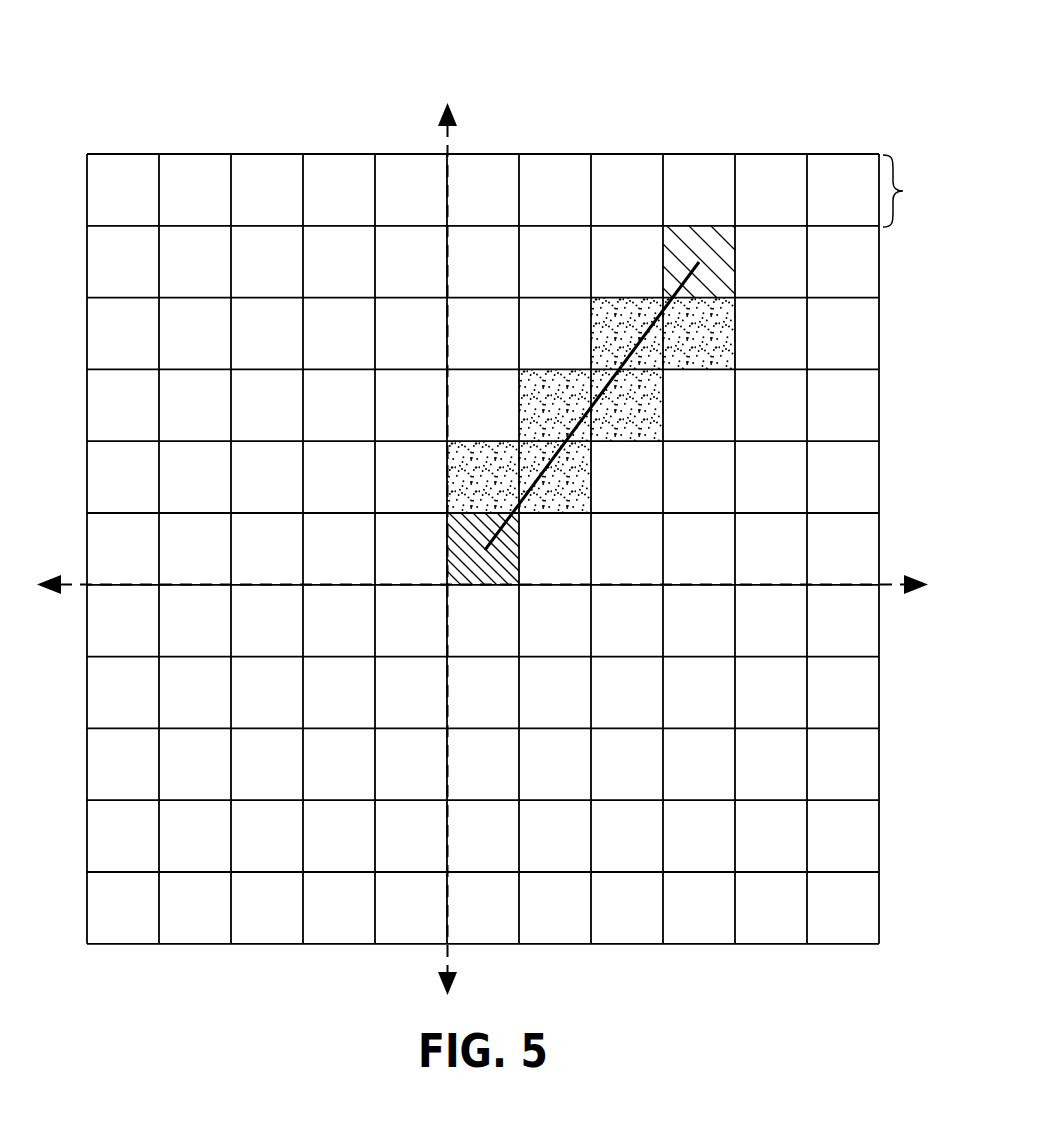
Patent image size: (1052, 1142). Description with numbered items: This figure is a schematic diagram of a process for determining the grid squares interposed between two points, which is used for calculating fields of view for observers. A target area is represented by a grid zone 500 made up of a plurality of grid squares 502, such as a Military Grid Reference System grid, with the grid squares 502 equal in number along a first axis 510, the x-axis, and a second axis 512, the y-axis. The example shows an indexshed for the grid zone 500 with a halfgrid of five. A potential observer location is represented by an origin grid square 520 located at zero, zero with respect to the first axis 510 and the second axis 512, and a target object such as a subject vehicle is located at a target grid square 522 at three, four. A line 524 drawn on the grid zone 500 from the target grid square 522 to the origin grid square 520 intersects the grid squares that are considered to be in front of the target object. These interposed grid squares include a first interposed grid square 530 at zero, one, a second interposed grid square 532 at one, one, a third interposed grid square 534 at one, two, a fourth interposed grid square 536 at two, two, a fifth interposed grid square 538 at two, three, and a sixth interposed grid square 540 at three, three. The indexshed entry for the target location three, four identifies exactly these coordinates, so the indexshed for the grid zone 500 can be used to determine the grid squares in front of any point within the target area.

The grid zone 500 is at (289, 98).
The grid squares 502 is at (920, 191).
The first axis 510 is at (447, 178).
The second axis 512 is at (852, 582).
The origin grid square 520 is at (470, 572).
The target grid square 522 is at (683, 236).
The line 524 is at (535, 484).
The first interposed grid square 530 is at (477, 460).
The second interposed grid square 532 is at (570, 483).
The third interposed grid square 534 is at (565, 388).
The fourth interposed grid square 536 is at (640, 397).
The fifth interposed grid square 538 is at (617, 318).
The sixth interposed grid square 540 is at (710, 340).